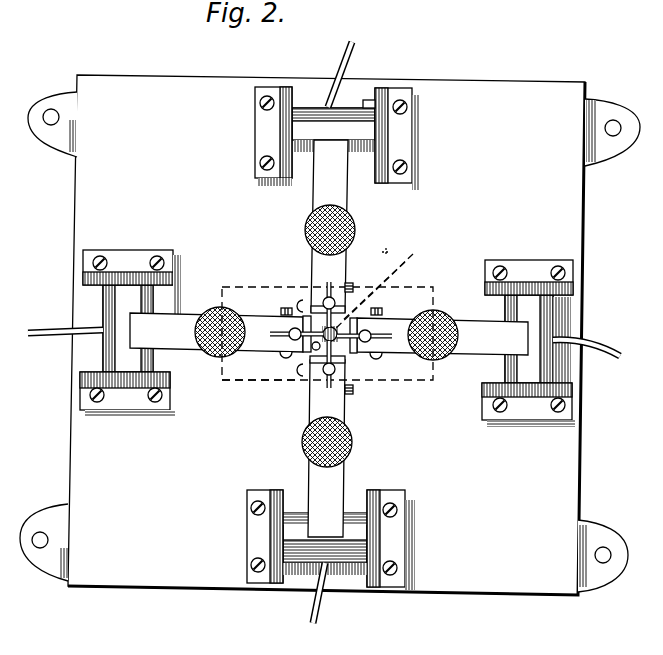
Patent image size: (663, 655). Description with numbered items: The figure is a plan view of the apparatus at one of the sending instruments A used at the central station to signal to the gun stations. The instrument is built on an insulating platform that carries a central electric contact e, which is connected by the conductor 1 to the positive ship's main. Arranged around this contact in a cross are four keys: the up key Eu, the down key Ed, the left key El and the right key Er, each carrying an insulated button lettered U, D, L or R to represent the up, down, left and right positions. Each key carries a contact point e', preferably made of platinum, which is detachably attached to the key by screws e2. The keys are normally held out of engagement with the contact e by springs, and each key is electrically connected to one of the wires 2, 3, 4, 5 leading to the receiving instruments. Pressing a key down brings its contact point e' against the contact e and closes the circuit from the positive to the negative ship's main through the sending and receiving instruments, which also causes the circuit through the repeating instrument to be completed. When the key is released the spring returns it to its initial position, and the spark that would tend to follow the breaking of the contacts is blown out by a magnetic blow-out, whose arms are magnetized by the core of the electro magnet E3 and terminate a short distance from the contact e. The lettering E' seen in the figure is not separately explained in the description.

The sending instrument A is at (330, 335).
The up key Eu is at (318, 207).
The down key Ed is at (345, 470).
The left key El is at (181, 321).
The right key Er is at (467, 330).
The electro magnet E3 is at (407, 298).
The base of switch E' is at (260, 400).
The electric contact e is at (353, 315).
The contact points e' is at (327, 344).
The screws e2 is at (280, 306).
The conductor 1 is at (378, 281).
The wire 2 is at (610, 353).
The wire 3 is at (344, 82).
The wire 4 is at (56, 328).
The wire 5 is at (327, 593).